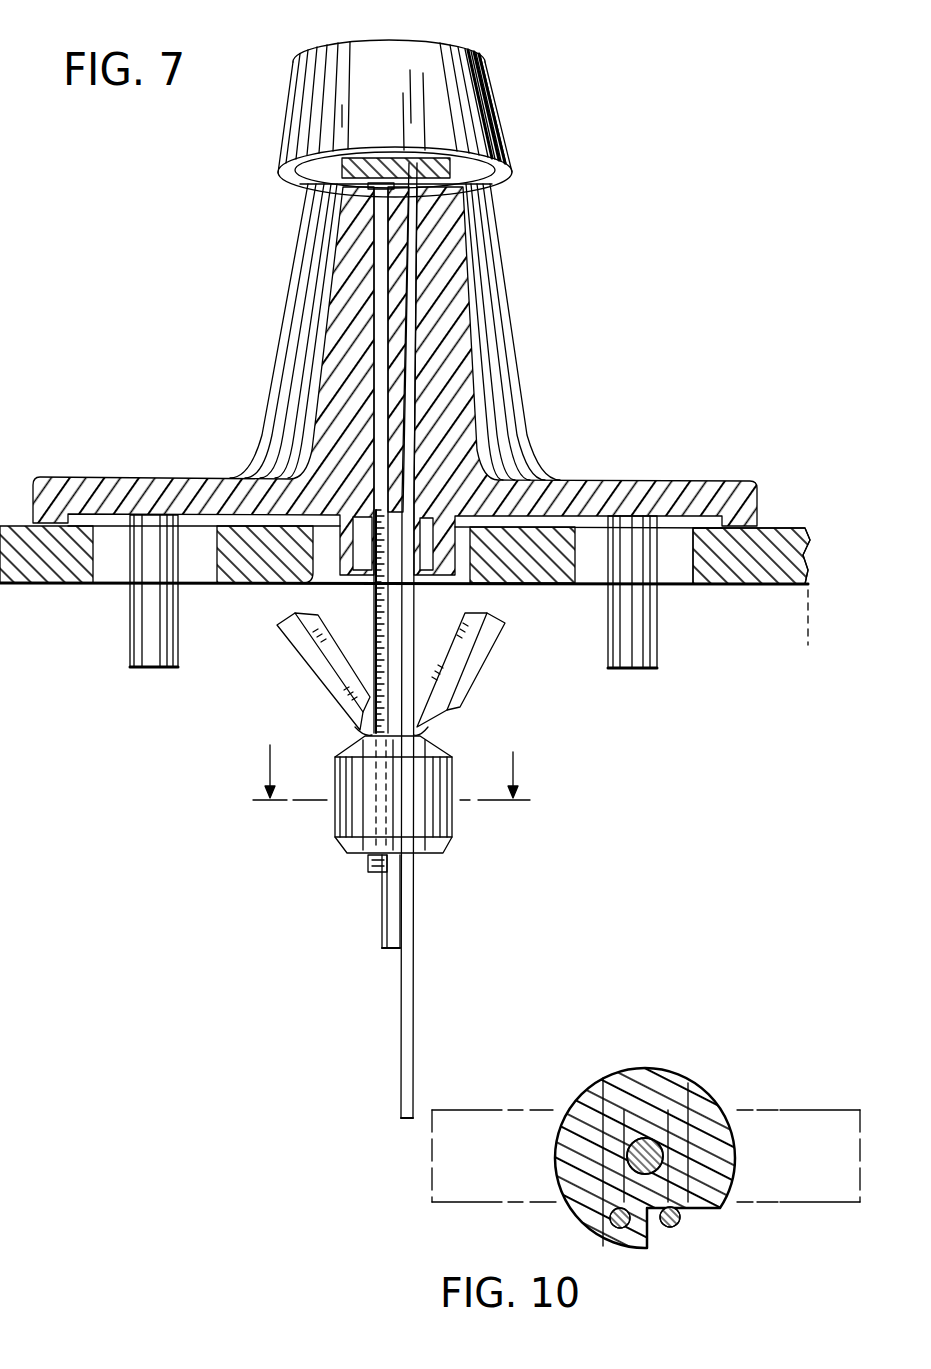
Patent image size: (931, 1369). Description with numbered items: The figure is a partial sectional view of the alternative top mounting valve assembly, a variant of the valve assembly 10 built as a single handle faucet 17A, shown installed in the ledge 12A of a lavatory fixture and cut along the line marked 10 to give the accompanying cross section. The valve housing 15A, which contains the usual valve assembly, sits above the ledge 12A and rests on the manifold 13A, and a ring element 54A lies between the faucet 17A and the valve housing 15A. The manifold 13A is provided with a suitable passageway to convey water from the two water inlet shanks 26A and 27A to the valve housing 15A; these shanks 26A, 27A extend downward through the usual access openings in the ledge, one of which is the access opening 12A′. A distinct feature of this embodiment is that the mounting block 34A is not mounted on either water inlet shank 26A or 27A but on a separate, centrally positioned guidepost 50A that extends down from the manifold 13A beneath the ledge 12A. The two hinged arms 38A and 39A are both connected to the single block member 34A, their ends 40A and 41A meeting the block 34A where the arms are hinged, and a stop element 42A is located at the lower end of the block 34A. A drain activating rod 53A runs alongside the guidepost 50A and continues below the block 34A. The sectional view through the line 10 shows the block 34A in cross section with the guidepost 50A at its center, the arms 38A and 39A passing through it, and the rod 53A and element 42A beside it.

In FIG. 7, the single handle faucet 17A is at (477, 44).
In FIG. 7, the seal ring 54A is at (307, 187).
In FIG. 7, the valve housing 15A is at (290, 296).
In FIG. 7, the manifold 13A is at (737, 493).
In FIG. 7, the ledge 12A is at (773, 543).
In FIG. 7, the access opening 12A′ is at (102, 573).
In FIG. 7, the water inlet shank 26A is at (128, 647).
In FIG. 7, the water inlet shank 27A is at (658, 653).
In FIG. 7, the guidepost 50A is at (388, 938).
In FIG. 10, the guidepost 50A is at (648, 1138).
In FIG. 7, the drain activating rod 53A is at (415, 1023).
In FIG. 10, the drain activating rod 53A is at (682, 1222).
In FIG. 7, the hinged arm 38A is at (313, 687).
In FIG. 10, the hinged arm 38A is at (552, 1108).
In FIG. 7, the hinged arm 39A is at (478, 677).
In FIG. 10, the hinged arm 39A is at (758, 1123).
In FIG. 7, the hook 40A is at (367, 733).
In FIG. 7, the hook 41A is at (418, 733).
In FIG. 7, the mounting block 34A is at (440, 853).
In FIG. 10, the mounting block 34A is at (678, 1083).
In FIG. 7, the stop block 42A is at (377, 872).
In FIG. 10, the stop block 42A is at (614, 1213).
In FIG. 7, the top mounting valve assembly 10 is at (391, 790).